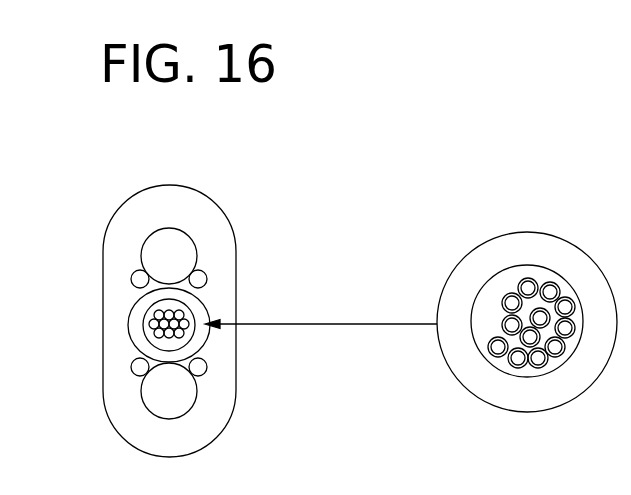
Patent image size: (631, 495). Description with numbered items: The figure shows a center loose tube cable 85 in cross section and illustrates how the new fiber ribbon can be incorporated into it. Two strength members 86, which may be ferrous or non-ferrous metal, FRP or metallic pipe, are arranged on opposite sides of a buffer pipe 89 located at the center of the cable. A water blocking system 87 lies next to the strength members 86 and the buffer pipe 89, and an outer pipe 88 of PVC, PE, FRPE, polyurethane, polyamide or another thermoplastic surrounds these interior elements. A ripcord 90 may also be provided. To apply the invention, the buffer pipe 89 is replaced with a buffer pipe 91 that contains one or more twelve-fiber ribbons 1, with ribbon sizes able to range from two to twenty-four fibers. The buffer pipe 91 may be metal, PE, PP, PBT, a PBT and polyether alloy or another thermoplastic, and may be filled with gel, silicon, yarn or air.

The center loose tube cable 85 is at (218, 203).
The strength members 86 is at (157, 247).
The water blocking system 87 is at (132, 282).
The outer pipe 88 is at (110, 308).
The buffer pipe 89 is at (133, 338).
The ripcord 90 is at (143, 382).
The buffer pipe 91 is at (558, 238).
The fiber ribbon 1 is at (518, 362).